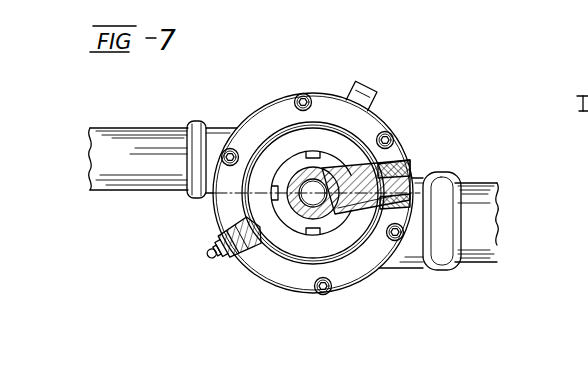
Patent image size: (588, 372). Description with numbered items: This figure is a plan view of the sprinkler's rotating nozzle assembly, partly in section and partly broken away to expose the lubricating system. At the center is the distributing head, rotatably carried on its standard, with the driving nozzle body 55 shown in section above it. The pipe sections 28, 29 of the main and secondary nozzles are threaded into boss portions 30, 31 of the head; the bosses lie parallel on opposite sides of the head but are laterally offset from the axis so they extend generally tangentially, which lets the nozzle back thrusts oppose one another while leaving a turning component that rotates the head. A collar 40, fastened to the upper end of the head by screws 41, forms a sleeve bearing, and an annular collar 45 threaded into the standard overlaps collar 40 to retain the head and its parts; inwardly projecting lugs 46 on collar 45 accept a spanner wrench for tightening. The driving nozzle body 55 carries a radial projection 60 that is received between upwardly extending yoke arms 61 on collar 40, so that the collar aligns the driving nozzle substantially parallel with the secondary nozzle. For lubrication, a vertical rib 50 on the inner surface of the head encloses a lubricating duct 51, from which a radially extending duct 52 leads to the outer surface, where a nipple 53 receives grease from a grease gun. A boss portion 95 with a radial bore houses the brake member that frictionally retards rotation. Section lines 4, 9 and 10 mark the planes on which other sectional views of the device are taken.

The section line 4- 4 is at (215, 161).
The section line 9- 9 is at (181, 247).
The section line 10- 10 is at (355, 122).
The pipe section 28 is at (478, 258).
The pipe section 29 is at (117, 143).
The boss portion 30 is at (412, 257).
The boss portion 31 is at (218, 129).
The collar 40 is at (277, 278).
The screws 41 is at (300, 93).
The annular collar 45 is at (278, 145).
The lugs 46 is at (323, 295).
The vertical rib 50 is at (253, 272).
The lubricating duct 51 is at (236, 218).
The radially extending duct 52 is at (230, 236).
The nipple 53 is at (213, 254).
The driving nozzle body 55 is at (328, 177).
The projection 60 is at (392, 166).
The yoke arms 61 is at (408, 180).
The boss portion 95 is at (376, 92).